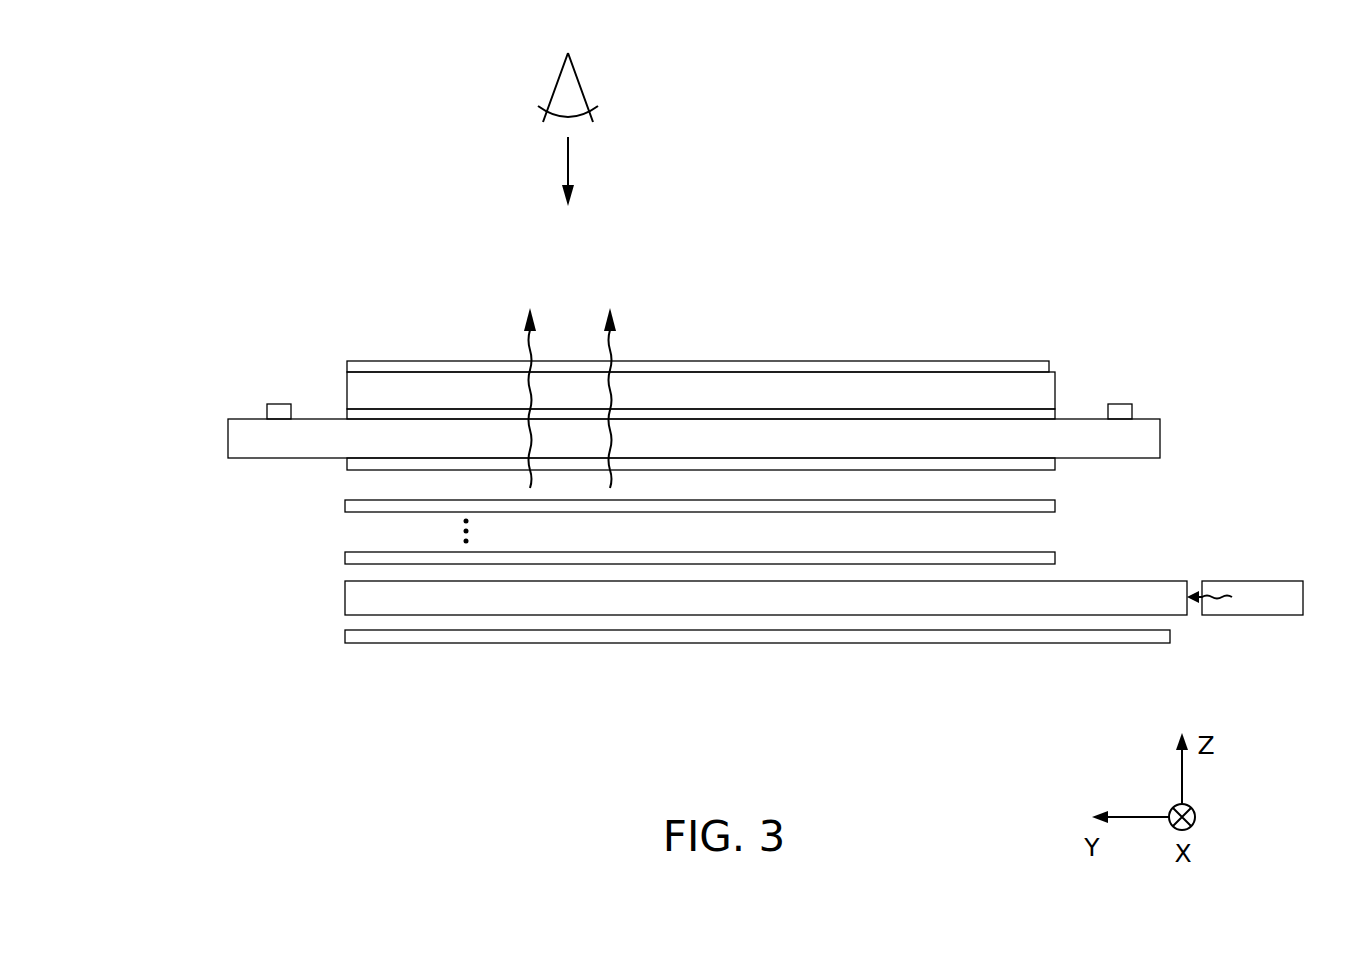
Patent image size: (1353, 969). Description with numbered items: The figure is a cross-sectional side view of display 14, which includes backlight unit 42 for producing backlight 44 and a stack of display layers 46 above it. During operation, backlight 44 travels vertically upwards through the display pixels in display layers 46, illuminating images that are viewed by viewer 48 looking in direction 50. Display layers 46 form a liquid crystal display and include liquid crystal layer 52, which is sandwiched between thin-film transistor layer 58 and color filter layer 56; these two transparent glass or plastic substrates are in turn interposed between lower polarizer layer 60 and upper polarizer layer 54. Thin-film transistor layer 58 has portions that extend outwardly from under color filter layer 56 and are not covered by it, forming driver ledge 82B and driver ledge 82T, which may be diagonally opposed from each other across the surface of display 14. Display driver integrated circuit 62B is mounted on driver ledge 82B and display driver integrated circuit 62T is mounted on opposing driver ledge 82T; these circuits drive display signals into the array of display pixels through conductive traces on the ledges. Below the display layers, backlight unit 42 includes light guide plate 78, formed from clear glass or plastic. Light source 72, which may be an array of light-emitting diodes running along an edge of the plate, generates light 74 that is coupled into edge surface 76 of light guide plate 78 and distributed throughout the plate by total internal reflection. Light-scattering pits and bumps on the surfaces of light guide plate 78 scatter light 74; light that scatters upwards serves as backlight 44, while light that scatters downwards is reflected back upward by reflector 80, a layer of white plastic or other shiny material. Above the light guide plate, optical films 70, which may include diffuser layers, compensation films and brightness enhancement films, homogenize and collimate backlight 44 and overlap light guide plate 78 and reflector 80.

The display 14 is at (1079, 176).
The backlight unit 42 is at (328, 497).
The backlight 44 is at (527, 342).
The display layers 46 is at (200, 338).
The viewer 48 is at (578, 84).
The direction 50 is at (568, 167).
The liquid crystal layer 52 is at (474, 414).
The upper polarizer layer 54 is at (371, 361).
The color filter layer 56 is at (419, 388).
The thin-film transistor layer 58 is at (503, 437).
The lower polarizer layer 60 is at (350, 464).
The display driver integrated circuit 62B is at (280, 407).
The display driver integrated circuit 62T is at (1132, 407).
The optical films 70 is at (1055, 505).
The light source 72 is at (1263, 581).
The light 74 is at (1220, 597).
The edge surface 76 is at (1196, 585).
The light guide plate 78 is at (595, 597).
The reflector 80 is at (418, 643).
The driver ledge 82B is at (227, 363).
The driver ledge 82T is at (1168, 375).